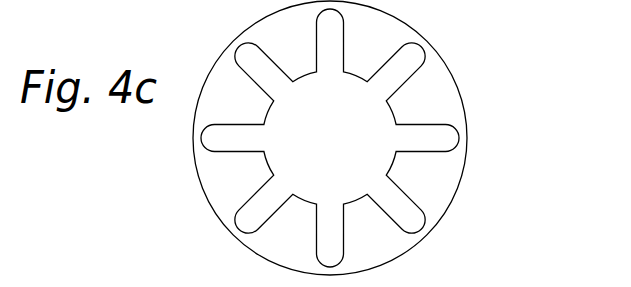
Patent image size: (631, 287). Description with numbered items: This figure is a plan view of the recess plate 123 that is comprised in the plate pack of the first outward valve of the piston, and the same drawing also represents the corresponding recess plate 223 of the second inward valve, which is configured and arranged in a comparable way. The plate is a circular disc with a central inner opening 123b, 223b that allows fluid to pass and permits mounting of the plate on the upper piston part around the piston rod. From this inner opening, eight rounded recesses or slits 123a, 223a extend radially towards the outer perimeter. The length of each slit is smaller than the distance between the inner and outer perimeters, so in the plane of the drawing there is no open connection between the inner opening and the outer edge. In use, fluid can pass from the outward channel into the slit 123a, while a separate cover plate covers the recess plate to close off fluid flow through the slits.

The recess plate 123 is at (230, 183).
The recess plate 223 is at (358, 138).
The slit 123a is at (413, 63).
The slit 223a is at (404, 138).
The inner opening 123b is at (347, 153).
The opening 223b is at (404, 138).